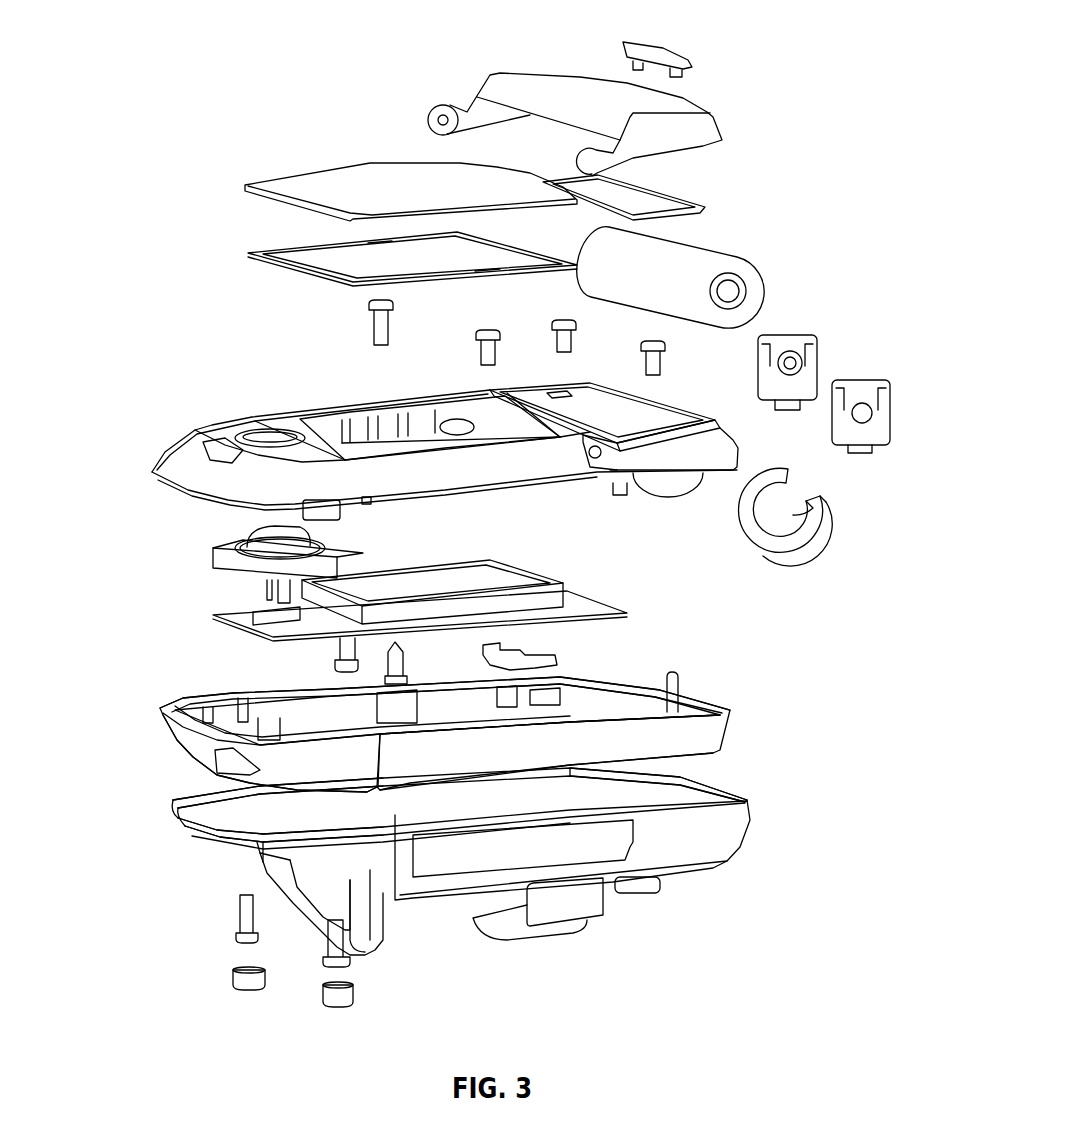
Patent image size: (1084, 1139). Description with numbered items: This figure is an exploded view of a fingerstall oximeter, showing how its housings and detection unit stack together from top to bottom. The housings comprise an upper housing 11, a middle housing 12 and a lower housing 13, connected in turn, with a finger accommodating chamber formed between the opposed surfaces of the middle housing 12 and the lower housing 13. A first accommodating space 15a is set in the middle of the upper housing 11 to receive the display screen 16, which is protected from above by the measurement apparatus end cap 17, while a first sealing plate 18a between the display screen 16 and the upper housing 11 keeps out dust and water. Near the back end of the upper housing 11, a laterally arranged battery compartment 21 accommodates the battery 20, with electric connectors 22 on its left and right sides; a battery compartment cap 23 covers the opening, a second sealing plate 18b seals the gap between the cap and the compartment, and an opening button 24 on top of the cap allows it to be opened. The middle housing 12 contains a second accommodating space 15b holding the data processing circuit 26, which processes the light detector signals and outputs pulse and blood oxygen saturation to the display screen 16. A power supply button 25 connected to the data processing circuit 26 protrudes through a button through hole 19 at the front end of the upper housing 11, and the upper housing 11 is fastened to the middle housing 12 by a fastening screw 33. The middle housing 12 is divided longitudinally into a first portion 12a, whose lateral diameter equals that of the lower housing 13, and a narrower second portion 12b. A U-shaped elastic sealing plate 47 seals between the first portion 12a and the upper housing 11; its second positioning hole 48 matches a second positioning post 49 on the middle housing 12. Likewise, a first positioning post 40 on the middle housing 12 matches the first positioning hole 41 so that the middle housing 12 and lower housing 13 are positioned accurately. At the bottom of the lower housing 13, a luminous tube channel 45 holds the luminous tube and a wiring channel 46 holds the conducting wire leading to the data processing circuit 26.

The upper housing 11 is at (150, 409).
The middle housing 12 is at (448, 702).
The first portion 12a is at (303, 773).
The second portion 12b is at (672, 737).
The lower housing 13 is at (472, 885).
The first accommodating space 15a is at (392, 427).
The second accommodating space 15b is at (351, 703).
The display screen 16 is at (477, 580).
The measurement apparatus end cap 17 is at (363, 178).
The first sealing plate 18a is at (263, 252).
The second sealing plate 18b is at (673, 193).
The button through hole 19 is at (263, 437).
The battery 20 is at (687, 257).
The battery compartment 21 is at (640, 410).
The electric connectors 22 is at (802, 382).
The battery compartment cap 23 is at (705, 130).
The opening button 24 is at (672, 60).
The power supply button 25 is at (240, 565).
The data processing circuit 26 is at (590, 608).
The fastening screw 33 is at (247, 920).
The first positioning post 40 is at (675, 683).
The first positioning hole 41 is at (710, 778).
The luminous tube channel 45 is at (507, 927).
The wiring channel 46 is at (580, 903).
The sealing plate 47 is at (180, 798).
The second positioning hole 48 is at (180, 828).
The second positioning post 49 is at (212, 712).